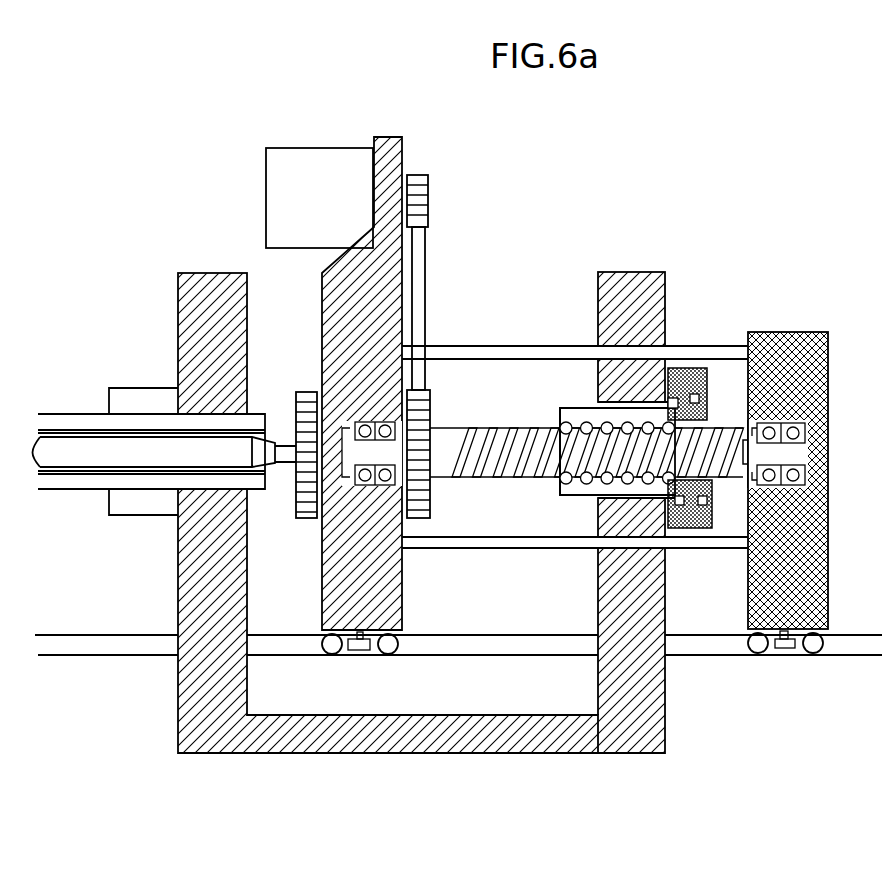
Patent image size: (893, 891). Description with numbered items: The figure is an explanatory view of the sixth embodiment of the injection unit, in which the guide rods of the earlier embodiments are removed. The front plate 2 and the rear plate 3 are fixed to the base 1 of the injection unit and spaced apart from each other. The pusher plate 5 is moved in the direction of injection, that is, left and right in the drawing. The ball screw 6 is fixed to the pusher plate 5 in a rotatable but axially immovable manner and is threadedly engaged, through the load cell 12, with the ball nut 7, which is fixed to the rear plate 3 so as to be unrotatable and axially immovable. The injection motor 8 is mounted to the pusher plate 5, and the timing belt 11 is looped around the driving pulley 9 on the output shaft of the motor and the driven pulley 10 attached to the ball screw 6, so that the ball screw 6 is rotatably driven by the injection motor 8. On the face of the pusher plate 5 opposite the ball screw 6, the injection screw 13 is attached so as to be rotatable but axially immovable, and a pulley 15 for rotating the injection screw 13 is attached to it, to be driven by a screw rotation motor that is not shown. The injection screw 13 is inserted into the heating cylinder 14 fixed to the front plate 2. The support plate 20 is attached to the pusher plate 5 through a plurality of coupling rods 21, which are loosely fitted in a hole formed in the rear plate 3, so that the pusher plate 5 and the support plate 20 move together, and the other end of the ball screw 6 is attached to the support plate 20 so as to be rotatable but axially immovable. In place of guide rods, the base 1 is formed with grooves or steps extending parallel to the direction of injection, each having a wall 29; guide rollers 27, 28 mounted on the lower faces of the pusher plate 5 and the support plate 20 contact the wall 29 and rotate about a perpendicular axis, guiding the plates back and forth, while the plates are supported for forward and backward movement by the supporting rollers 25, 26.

The base 1 is at (75, 632).
The front plate 2 is at (185, 602).
The rear plate 3 is at (622, 272).
The pusher plate 5 is at (323, 265).
The ball screw 6 is at (522, 425).
The ball nut 7 is at (575, 495).
The injection motor 8 is at (266, 170).
The driving pulley 9 is at (428, 183).
The driven pulley 10 is at (430, 508).
The timing belt 11 is at (425, 250).
The load cell 12 is at (690, 368).
The injection screw 13 is at (147, 443).
The heating cylinder 14 is at (85, 415).
The pulley 15 is at (296, 393).
The support plate 20 is at (797, 332).
The coupling rods 21 is at (700, 550).
The supporting roller 25 is at (330, 655).
The supporting roller 26 is at (760, 655).
The guide roller 27 is at (355, 650).
The guide roller 28 is at (783, 648).
The wall 29 is at (483, 645).